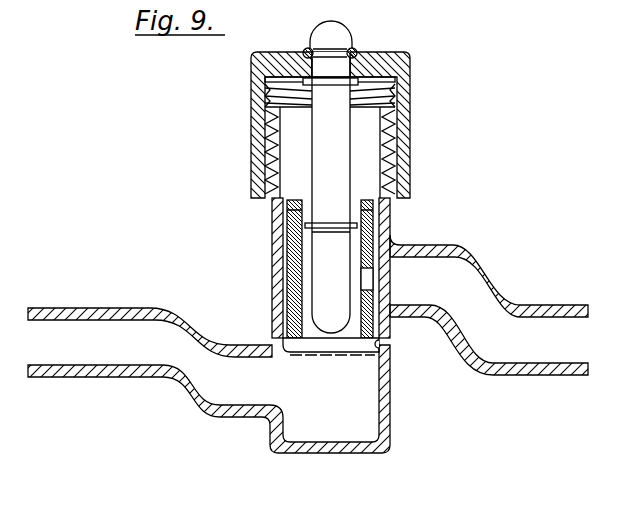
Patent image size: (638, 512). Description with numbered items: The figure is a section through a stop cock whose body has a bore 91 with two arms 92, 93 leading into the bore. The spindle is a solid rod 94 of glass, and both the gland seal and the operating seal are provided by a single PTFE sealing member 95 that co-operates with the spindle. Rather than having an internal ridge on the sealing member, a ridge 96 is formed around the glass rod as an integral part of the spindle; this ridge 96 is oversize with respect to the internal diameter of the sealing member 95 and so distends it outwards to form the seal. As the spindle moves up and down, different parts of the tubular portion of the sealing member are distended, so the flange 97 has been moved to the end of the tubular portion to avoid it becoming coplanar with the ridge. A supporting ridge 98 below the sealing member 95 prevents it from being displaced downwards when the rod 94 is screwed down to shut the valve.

The bore 91 is at (280, 290).
The arm 92 is at (148, 352).
The arm 93 is at (466, 301).
The solid rod 94 is at (343, 142).
The PTFE sealing member 95 is at (295, 262).
The ridge 96 is at (347, 227).
The flange 97 is at (356, 206).
The supporting ridge 98 is at (380, 347).